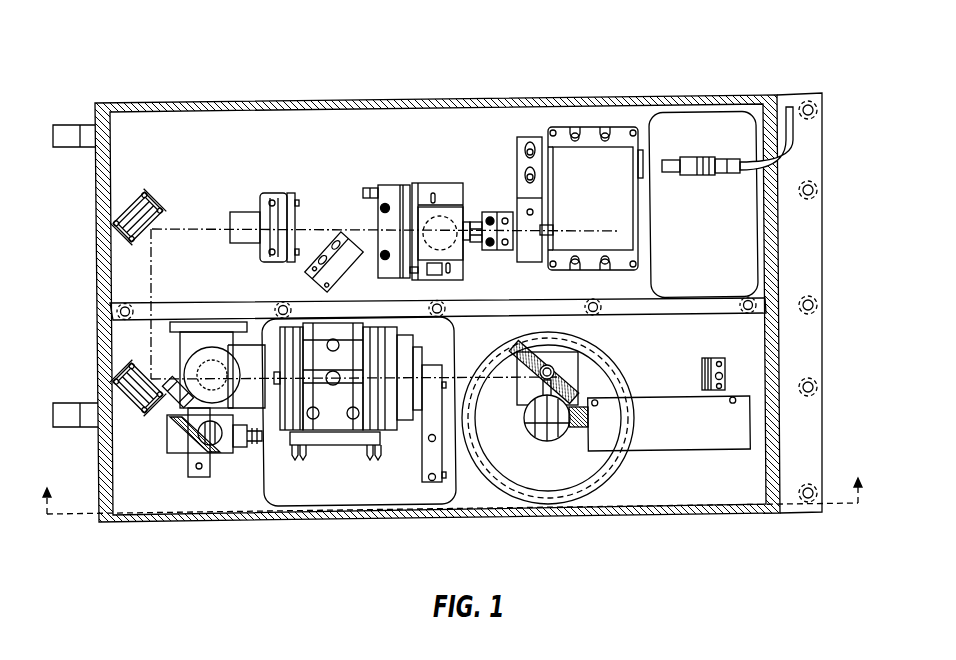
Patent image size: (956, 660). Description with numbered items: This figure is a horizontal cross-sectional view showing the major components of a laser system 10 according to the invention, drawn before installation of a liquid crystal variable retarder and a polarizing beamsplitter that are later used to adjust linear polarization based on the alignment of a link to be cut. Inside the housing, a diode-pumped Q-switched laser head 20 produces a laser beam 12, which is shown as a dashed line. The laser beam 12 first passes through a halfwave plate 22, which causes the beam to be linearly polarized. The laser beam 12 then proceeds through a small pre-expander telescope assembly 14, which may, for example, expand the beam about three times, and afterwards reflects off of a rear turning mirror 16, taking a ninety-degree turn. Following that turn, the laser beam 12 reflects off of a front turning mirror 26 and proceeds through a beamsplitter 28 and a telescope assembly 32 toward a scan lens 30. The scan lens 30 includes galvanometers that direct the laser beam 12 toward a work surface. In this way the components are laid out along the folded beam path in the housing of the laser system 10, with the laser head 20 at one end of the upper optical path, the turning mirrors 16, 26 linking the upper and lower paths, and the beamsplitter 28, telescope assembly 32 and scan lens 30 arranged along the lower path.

The laser system 10 is at (452, 50).
The laser beam 12 is at (225, 228).
The pre-expander telescope assembly 14 is at (245, 212).
The rear turning mirror 16 is at (128, 213).
The diode-pumped Q-switched laser head 20 is at (567, 158).
The halfwave plate 22 is at (557, 213).
The front turning mirror 26 is at (118, 372).
The beamsplitter 28 is at (180, 397).
The scan lens 30 is at (490, 481).
The telescope assembly 32 is at (336, 444).